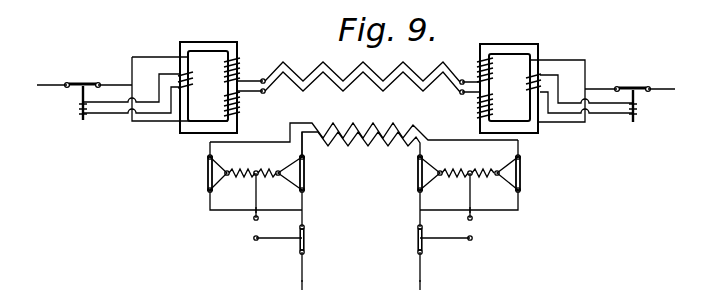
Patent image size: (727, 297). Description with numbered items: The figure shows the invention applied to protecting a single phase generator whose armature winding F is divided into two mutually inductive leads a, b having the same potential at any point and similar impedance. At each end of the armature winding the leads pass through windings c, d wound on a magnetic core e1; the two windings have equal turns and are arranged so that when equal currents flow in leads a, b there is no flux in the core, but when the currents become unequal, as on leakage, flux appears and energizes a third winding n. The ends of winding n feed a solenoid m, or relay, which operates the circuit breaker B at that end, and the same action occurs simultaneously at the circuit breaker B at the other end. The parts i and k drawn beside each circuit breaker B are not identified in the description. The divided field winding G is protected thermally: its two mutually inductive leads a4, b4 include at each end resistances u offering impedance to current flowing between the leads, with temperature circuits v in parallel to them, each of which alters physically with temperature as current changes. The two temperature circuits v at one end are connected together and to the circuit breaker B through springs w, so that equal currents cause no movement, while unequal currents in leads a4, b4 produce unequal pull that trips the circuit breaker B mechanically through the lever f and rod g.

The magnetic core e1 is at (202, 47).
The winding c is at (356, 70).
The winding d is at (358, 104).
The third winding n is at (359, 84).
The armature winding F is at (358, 76).
The lead a is at (405, 64).
The lead b is at (410, 86).
The lead a4 is at (346, 126).
The lead b4 is at (343, 146).
The field winding G is at (364, 135).
The resistance u is at (207, 171).
The temperature circuit v is at (237, 169).
The spring w is at (257, 170).
The lever f is at (254, 199).
The rod g is at (262, 240).
The switch / key i is at (306, 246).
The circuit breaker B is at (93, 58).
The key stem k is at (85, 122).
The solenoid m is at (80, 116).